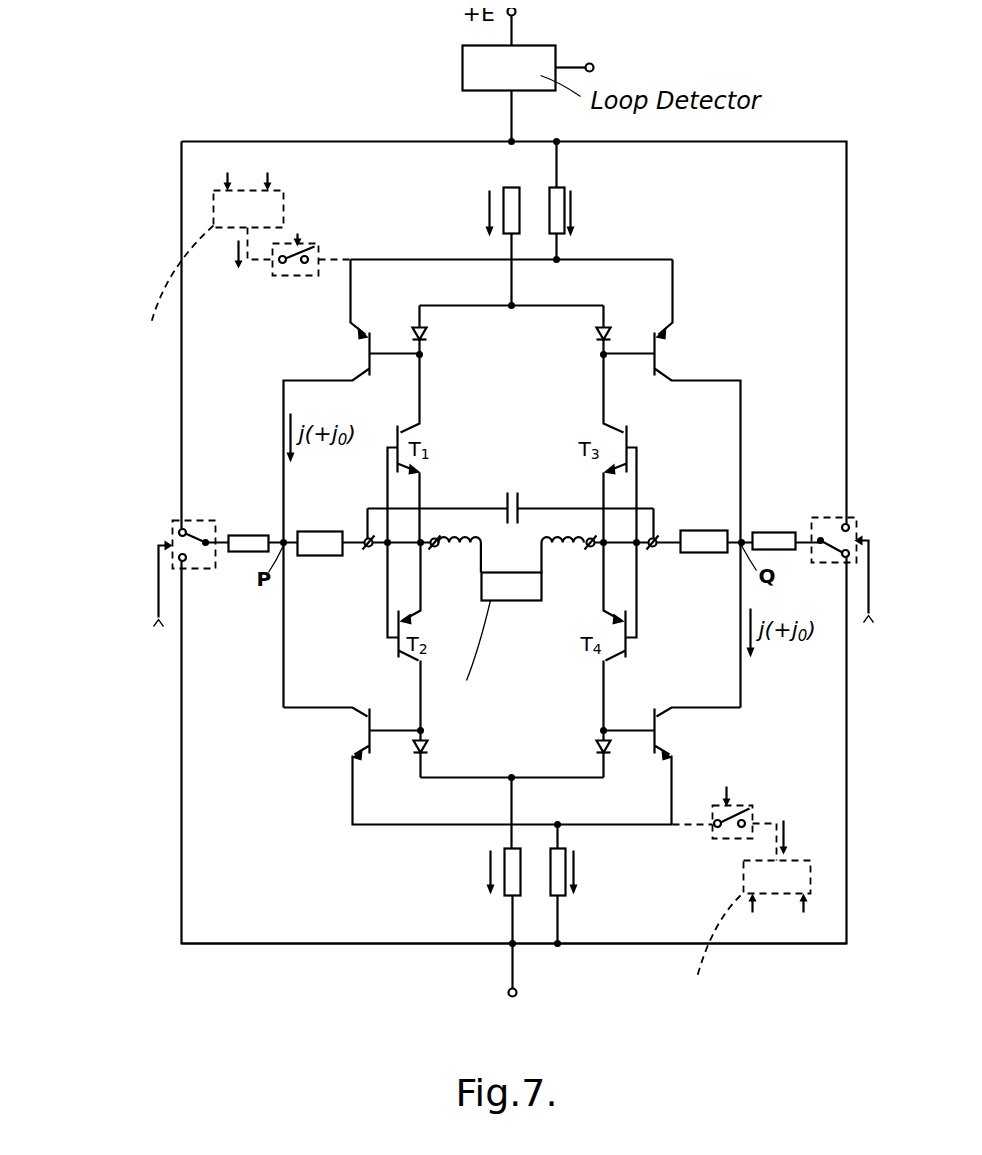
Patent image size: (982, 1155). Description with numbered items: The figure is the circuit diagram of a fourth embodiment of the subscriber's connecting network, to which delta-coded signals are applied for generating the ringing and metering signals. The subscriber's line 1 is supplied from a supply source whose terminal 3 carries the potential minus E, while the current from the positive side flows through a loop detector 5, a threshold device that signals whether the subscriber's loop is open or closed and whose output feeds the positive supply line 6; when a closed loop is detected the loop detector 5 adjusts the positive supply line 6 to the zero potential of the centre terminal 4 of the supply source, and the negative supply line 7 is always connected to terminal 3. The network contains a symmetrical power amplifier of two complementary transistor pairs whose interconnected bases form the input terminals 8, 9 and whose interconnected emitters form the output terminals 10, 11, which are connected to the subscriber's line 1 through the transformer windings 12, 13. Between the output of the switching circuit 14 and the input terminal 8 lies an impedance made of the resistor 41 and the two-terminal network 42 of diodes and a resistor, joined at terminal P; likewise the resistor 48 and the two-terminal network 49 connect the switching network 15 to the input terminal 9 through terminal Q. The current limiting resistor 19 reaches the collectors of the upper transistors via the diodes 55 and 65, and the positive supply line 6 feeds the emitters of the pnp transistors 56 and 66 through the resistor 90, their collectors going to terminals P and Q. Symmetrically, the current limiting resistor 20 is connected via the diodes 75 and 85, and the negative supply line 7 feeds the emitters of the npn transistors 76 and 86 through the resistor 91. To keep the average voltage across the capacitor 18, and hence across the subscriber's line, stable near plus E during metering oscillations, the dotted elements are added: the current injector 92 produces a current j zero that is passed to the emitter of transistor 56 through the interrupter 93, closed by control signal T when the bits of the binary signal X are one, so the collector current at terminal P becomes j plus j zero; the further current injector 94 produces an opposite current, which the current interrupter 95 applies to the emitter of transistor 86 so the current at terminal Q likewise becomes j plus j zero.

The subscriber's line 1 is at (500, 600).
The supply source terminal 3 is at (517, 993).
The centre terminal of the supply source 4 is at (588, 62).
The loop detector 5 is at (462, 62).
The positive supply line 6 is at (392, 140).
The negative supply line 7 is at (328, 943).
The input terminal 8 is at (368, 548).
The input terminal 9 is at (652, 548).
The output terminal 10 is at (436, 548).
The output terminal 11 is at (588, 548).
The transformer winding 12 is at (472, 535).
The transformer winding 13 is at (578, 535).
The switching circuit 14 is at (194, 520).
The switching network 15 is at (828, 517).
The capacitor 18 is at (507, 500).
The current limiting resistor 19 is at (503, 200).
The current limiting resistor 20 is at (507, 888).
The resistor 41 is at (248, 535).
The two-terminal network 42 is at (318, 534).
The resistor 48 is at (770, 533).
The two-terminal network 49 is at (698, 532).
The diode 55 is at (428, 331).
The pnp transistor 56 is at (367, 362).
The diode 65 is at (595, 333).
The pnp transistor 66 is at (657, 362).
The diode 75 is at (428, 746).
The npn transistor 76 is at (367, 728).
The diode 85 is at (595, 746).
The npn transistor 86 is at (656, 728).
The resistor 90 is at (564, 198).
The resistor 91 is at (564, 888).
The current injector 92 is at (285, 210).
The interrupter 93 is at (292, 275).
The current injector 94 is at (742, 872).
The current interrupter 95 is at (710, 840).